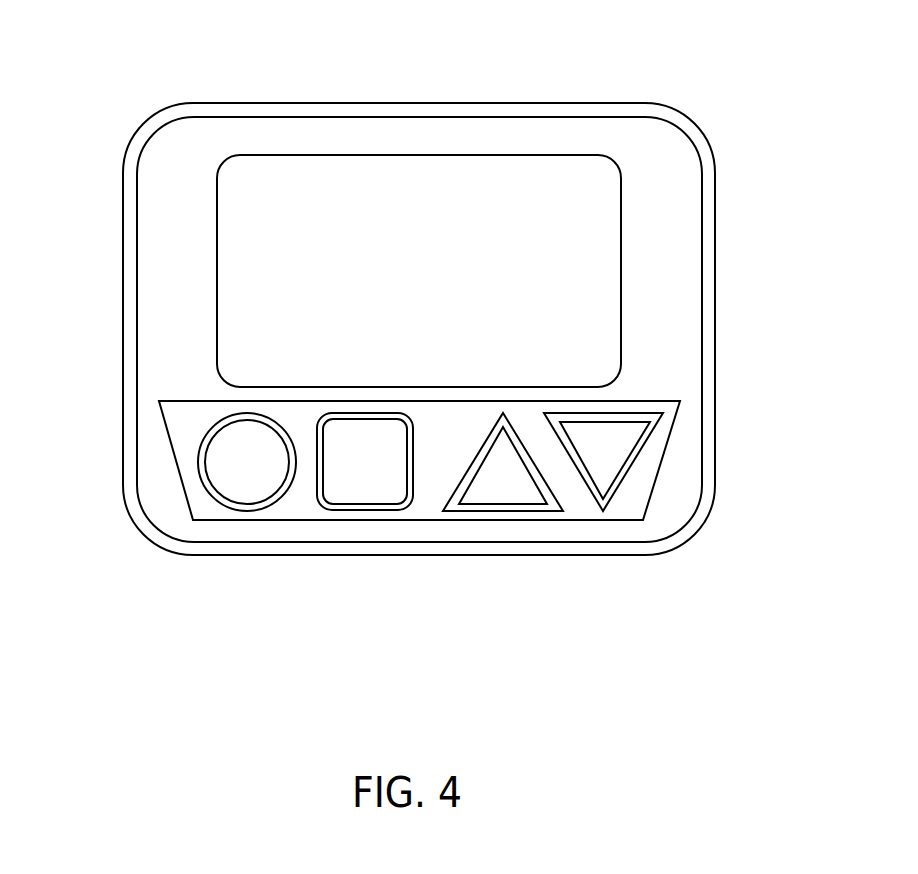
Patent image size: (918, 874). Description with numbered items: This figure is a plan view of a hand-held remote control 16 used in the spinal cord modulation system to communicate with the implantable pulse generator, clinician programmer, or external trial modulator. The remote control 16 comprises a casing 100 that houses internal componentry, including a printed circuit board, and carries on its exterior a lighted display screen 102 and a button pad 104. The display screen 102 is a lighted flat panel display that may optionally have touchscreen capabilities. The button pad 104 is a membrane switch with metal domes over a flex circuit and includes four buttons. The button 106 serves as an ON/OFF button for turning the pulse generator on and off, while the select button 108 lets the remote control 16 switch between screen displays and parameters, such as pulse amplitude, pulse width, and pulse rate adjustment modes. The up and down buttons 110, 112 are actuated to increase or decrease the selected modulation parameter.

The remote control 16 is at (701, 119).
The casing 100 is at (685, 252).
The display screen 102 is at (448, 168).
The button pad 104 is at (187, 427).
The ON/OFF button 106 is at (249, 485).
The select button 108 is at (382, 485).
The up button 110 is at (515, 485).
The down button 112 is at (605, 465).